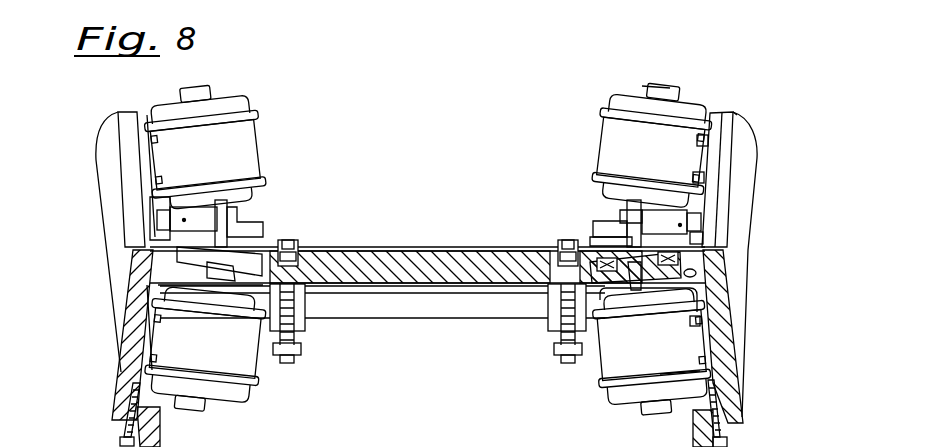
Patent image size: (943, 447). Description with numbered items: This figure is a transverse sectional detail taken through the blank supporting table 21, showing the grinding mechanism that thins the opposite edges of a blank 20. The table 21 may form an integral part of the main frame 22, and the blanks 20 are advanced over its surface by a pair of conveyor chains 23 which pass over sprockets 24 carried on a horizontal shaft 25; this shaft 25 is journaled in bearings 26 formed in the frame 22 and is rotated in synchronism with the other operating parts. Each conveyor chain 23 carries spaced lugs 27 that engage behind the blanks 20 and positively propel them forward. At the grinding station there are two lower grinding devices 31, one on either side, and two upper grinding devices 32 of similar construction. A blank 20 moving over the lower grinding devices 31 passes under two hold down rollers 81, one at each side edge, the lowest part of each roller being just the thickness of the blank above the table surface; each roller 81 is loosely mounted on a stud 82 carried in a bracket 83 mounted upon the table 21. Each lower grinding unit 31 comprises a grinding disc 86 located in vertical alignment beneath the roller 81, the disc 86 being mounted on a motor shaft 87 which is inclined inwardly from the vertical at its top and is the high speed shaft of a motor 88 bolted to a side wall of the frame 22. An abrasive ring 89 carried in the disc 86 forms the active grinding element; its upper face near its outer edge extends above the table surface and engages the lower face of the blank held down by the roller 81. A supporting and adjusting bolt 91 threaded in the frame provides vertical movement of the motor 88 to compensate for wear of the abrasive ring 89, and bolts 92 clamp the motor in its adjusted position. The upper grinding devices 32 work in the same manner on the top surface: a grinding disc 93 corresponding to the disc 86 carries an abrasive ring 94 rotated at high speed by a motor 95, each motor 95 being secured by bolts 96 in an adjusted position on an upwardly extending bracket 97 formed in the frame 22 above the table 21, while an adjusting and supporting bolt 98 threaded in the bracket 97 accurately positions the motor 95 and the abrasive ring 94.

The blank 20 is at (400, 248).
The table 21 is at (455, 251).
The main frame 22 is at (130, 323).
The conveyor chain 23 is at (301, 358).
The sprocket 24 is at (296, 334).
The horizontal shaft 25 is at (388, 310).
The bearing 26 is at (607, 298).
The lug 27 is at (292, 241).
The lower grinding device 31 is at (245, 374).
The upper grinding device 32 is at (248, 151).
The hold down roller 81 is at (232, 211).
The stud 82 is at (242, 219).
The bracket 83 is at (425, 218).
The grinding disc 86 is at (698, 293).
The motor shaft 87 is at (640, 281).
The motor 88 is at (679, 366).
The abrasive ring 89 is at (691, 276).
The supporting and adjusting bolt 91 is at (730, 434).
The clamping bolt 92 is at (701, 322).
The grinding disc 93 is at (595, 224).
The abrasive ring 94 is at (593, 240).
The motor 95 is at (627, 100).
The bolt 96 is at (700, 141).
The bracket 97 is at (731, 114).
The adjusting and supporting bolt 98 is at (704, 239).